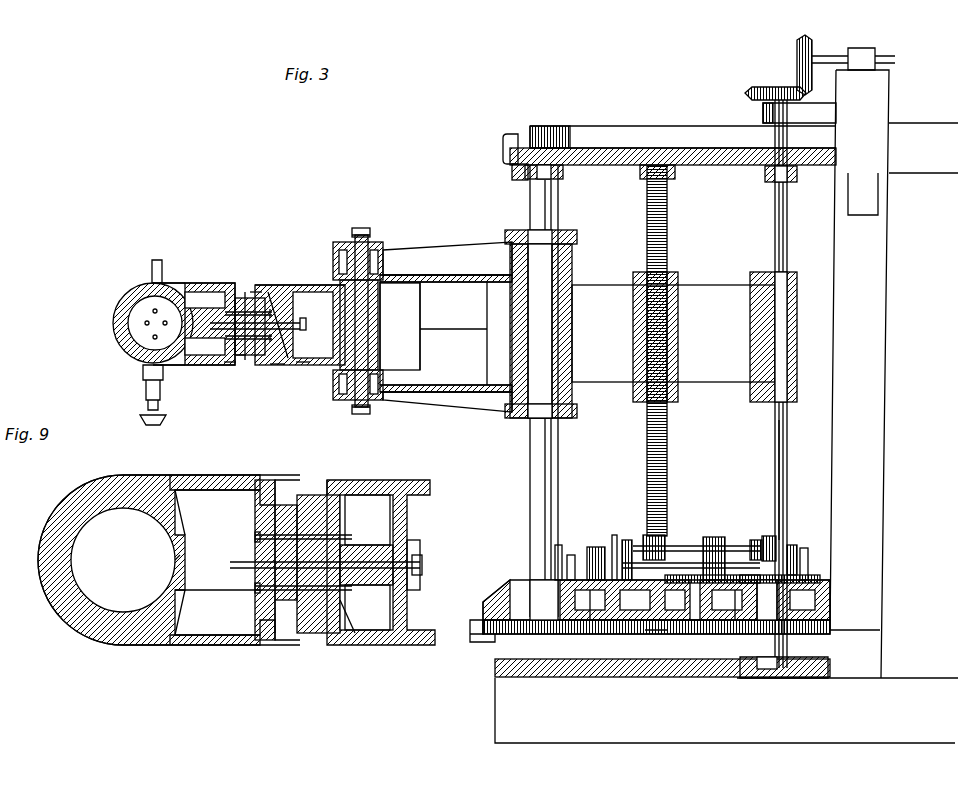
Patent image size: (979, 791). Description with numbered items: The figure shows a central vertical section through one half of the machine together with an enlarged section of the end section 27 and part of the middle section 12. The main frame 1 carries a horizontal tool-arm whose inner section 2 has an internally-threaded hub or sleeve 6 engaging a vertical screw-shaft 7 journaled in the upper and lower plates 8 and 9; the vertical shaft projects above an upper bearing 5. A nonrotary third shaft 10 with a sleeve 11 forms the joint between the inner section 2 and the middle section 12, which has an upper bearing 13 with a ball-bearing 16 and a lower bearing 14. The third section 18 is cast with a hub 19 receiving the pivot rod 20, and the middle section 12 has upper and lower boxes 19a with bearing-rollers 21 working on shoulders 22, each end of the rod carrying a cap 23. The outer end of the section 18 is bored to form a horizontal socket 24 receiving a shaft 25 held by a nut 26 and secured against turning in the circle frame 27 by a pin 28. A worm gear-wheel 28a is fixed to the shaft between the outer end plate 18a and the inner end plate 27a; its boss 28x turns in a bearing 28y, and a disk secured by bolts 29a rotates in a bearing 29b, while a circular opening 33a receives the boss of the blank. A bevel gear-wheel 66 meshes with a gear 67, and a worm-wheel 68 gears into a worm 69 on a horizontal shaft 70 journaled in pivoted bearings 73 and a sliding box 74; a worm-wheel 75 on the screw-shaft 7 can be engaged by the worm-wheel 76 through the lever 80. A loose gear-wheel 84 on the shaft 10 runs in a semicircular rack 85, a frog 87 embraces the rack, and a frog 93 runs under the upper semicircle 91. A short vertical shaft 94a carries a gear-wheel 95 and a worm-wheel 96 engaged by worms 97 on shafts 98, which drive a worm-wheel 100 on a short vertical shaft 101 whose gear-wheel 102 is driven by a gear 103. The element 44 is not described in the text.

In FIG. 3, the main frame 1 is at (726, 406).
In FIG. 3, the inner section 2 is at (673, 333).
In FIG. 3, the upper bearing 5 is at (799, 112).
In FIG. 3, the internally-threaded hub or sleeve 6 is at (678, 280).
In FIG. 3, the vertical screw-shaft 7 is at (670, 236).
In FIG. 3, the upper horizontal arm or plate 8 is at (710, 166).
In FIG. 3, the lower horizontal arm or plate 9 is at (510, 580).
In FIG. 3, the third shaft 10 is at (558, 203).
In FIG. 3, the sleeve 11 is at (556, 232).
In FIG. 3, the middle section 12 is at (446, 327).
In FIG. 3, the upper bearing 13 is at (788, 245).
In FIG. 3, the lower bearing 14 is at (572, 400).
In FIG. 3, the ball-bearing 16 is at (572, 282).
In FIG. 3, the third section 18 is at (303, 285).
In FIG. 3, the outer end plate 18a is at (300, 285).
In FIG. 9, the outer end plate 18a is at (372, 480).
In FIG. 3, the hub 19 is at (380, 325).
In FIG. 3, the upper and lower boxes 19a is at (410, 244).
In FIG. 3, the rod or shaft 20 is at (360, 240).
In FIG. 3, the bearing-rollers 21 is at (385, 258).
In FIG. 3, the shoulders 22 is at (356, 406).
In FIG. 3, the cap 23 is at (352, 232).
In FIG. 3, the horizontal socket 24 is at (296, 298).
In FIG. 9, the horizontal socket 24 is at (367, 607).
In FIG. 3, the shaft 25 is at (302, 330).
In FIG. 9, the shaft 25 is at (325, 562).
In FIG. 3, the nut 26 is at (305, 318).
In FIG. 9, the nut 26 is at (412, 548).
In FIG. 3, the circle frame or casting 27 is at (212, 283).
In FIG. 9, the circle frame or casting 27 is at (210, 480).
In FIG. 3, the inner end plate 27a is at (240, 366).
In FIG. 9, the inner end plate 27a is at (283, 505).
In FIG. 3, the pin 28 is at (262, 292).
In FIG. 9, the pin 28 is at (217, 604).
In FIG. 9, the worm gear-wheel 28a is at (312, 633).
In FIG. 3, the boss 28x is at (280, 366).
In FIG. 9, the boss 28x is at (345, 633).
In FIG. 3, the bearing 28y is at (278, 292).
In FIG. 9, the bearing 28y is at (340, 480).
In FIG. 3, the bolts 29a is at (226, 366).
In FIG. 9, the bolts 29a is at (285, 623).
In FIG. 3, the bearing 29b is at (300, 366).
In FIG. 9, the bearing 29b is at (368, 520).
In FIG. 3, the circular opening 33a is at (168, 285).
In FIG. 9, the circular opening 33a is at (172, 535).
In FIG. 3, the bearing block 44 is at (858, 48).
In FIG. 3, the bevel gear-wheel 66 is at (757, 87).
In FIG. 3, the gear 67 is at (797, 52).
In FIG. 3, the worm-wheel 68 is at (778, 540).
In FIG. 3, the worm 69 is at (781, 500).
In FIG. 3, the horizontal shaft 70 is at (712, 537).
In FIG. 3, the pivoted bearings 73 is at (806, 548).
In FIG. 3, the box 74 is at (603, 548).
In FIG. 3, the worm-wheel 75 is at (666, 548).
In FIG. 3, the worm-wheel 76 is at (665, 540).
In FIG. 3, the crank or lever 80 is at (612, 546).
In FIG. 3, the loose gear-wheel 84 is at (537, 634).
In FIG. 3, the semicircular rack 85 is at (690, 634).
In FIG. 3, the frog 87 is at (480, 642).
In FIG. 3, the upper semicircle 91 is at (503, 150).
In FIG. 3, the frog 93 is at (514, 172).
In FIG. 3, the short vertical shaft 94a is at (647, 643).
In FIG. 3, the gear-wheel 95 is at (594, 634).
In FIG. 3, the worm-wheel 96 is at (586, 545).
In FIG. 3, the worms 97 is at (599, 548).
In FIG. 3, the shaft 98 is at (792, 545).
In FIG. 3, the worm-wheel 100 is at (754, 540).
In FIG. 3, the short vertical shaft 101 is at (732, 634).
In FIG. 3, the gear-wheel 102 is at (712, 572).
In FIG. 3, the gear 103 is at (800, 580).